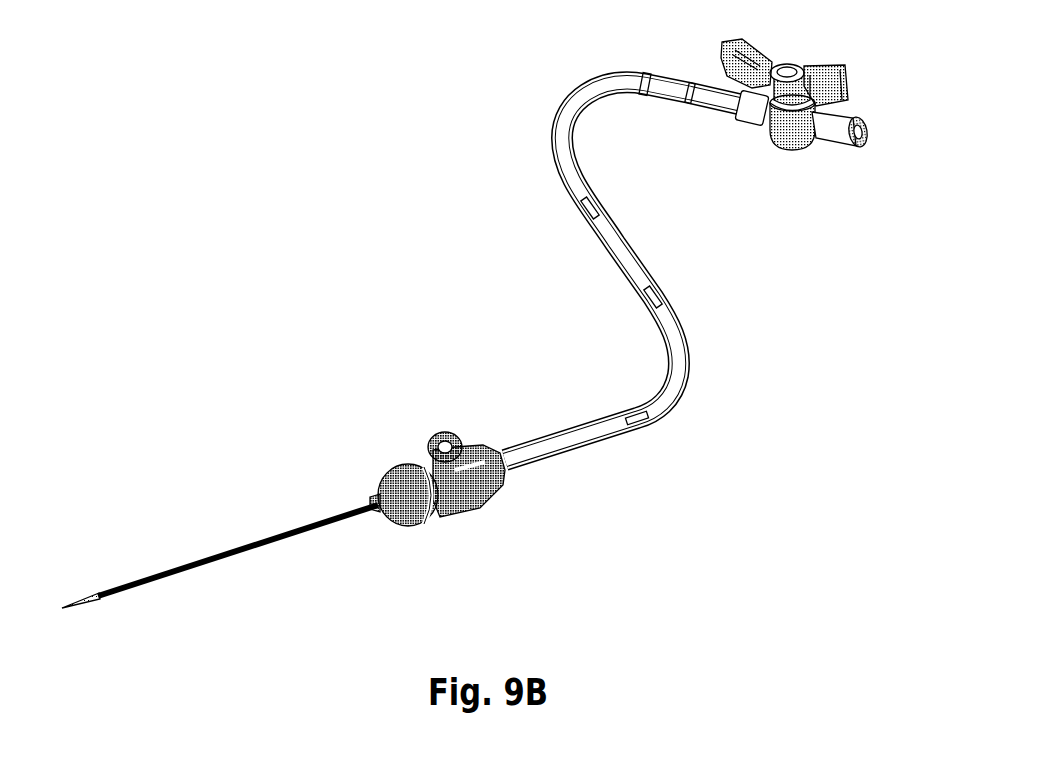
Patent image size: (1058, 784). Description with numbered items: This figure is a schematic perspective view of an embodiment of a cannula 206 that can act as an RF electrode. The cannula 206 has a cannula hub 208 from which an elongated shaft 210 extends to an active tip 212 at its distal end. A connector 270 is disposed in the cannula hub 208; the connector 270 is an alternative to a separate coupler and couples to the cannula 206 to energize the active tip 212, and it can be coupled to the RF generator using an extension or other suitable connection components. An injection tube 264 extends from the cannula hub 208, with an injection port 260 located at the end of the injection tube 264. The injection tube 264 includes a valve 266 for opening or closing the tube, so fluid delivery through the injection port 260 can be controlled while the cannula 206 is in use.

The cannula 206 is at (221, 543).
The cannula hub 208 is at (435, 513).
The shaft 210 is at (295, 538).
The active tip 212 is at (70, 598).
The injection port 260 is at (862, 138).
The injection tube 264 is at (687, 353).
The valve 266 is at (800, 147).
The connector 270 is at (428, 437).